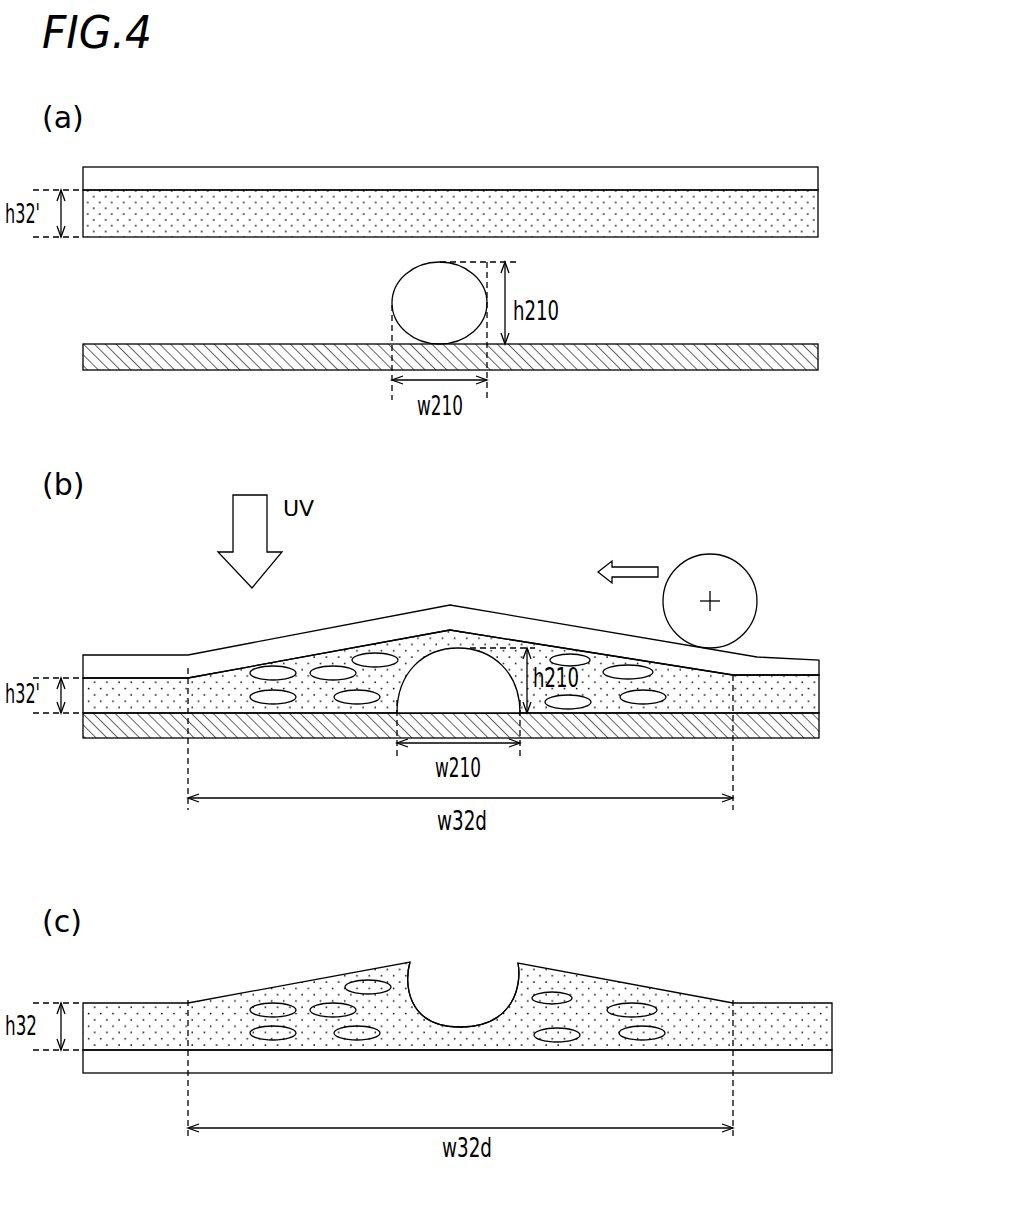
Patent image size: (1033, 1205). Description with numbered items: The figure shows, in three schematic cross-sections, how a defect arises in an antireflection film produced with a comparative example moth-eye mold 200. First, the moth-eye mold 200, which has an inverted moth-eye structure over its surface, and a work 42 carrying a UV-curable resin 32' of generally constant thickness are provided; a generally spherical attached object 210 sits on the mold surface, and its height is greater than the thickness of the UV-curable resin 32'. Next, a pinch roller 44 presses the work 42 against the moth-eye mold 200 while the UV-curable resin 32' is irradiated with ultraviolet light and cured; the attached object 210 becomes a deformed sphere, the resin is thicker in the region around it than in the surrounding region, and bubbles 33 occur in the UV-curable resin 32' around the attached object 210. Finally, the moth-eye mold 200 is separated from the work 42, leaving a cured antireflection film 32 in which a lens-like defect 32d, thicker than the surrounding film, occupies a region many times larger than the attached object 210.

The work 42 is at (795, 178).
The UV-curable resin 32' is at (494, 451).
The antireflection film 32 is at (500, 1006).
The defect 32d is at (629, 967).
The bubbles 33 is at (277, 700).
The pinch roller 44 is at (725, 573).
The moth-eye mold 200 is at (818, 355).
The attached object 210 is at (405, 312).